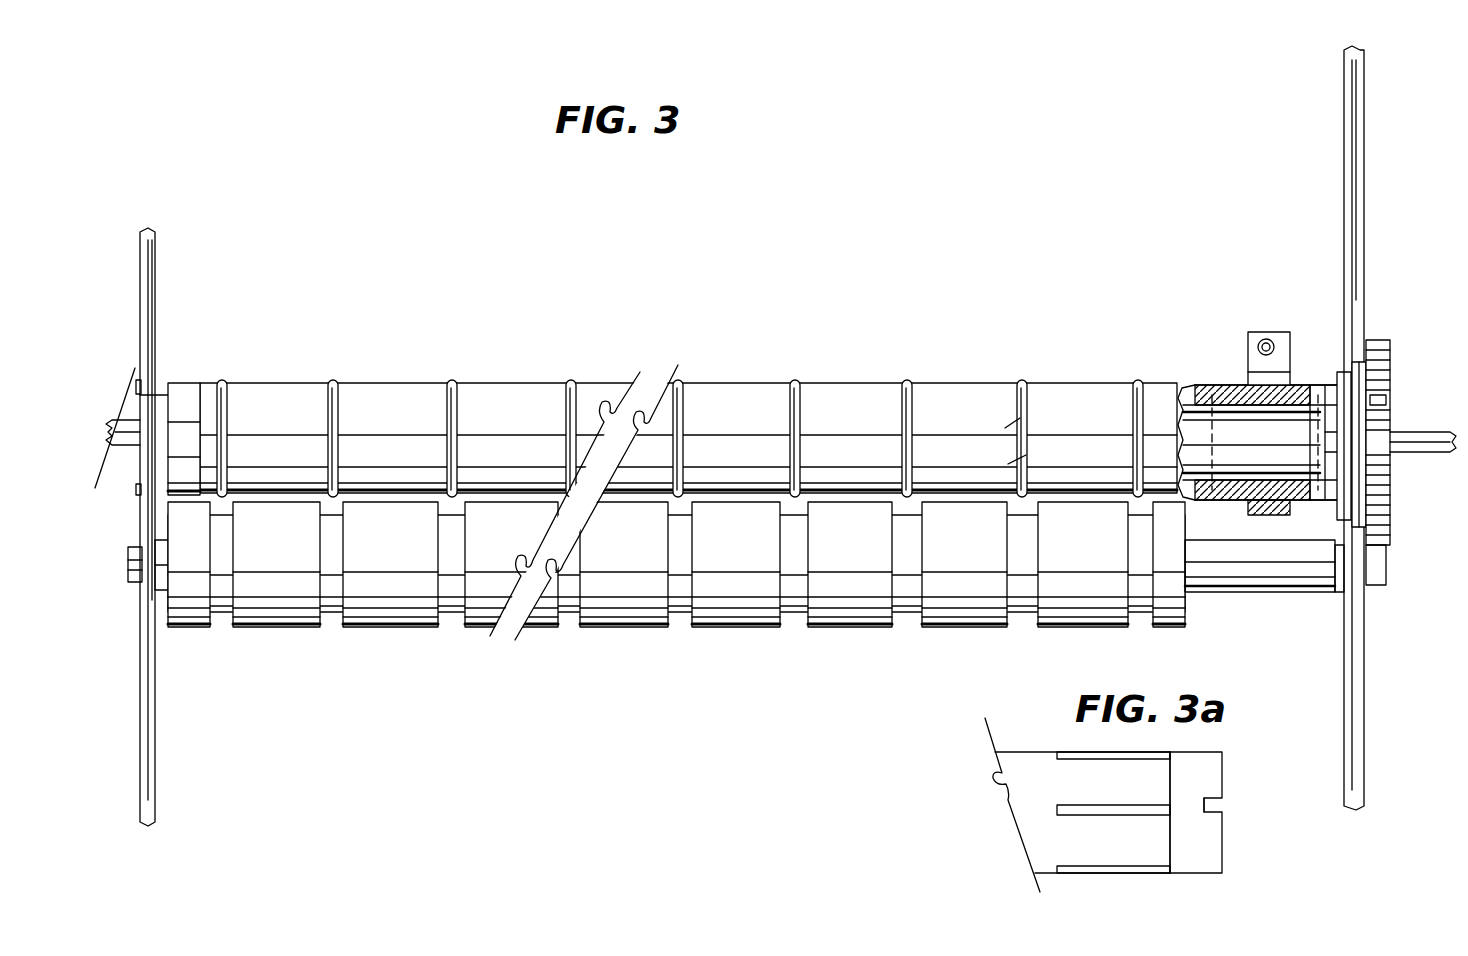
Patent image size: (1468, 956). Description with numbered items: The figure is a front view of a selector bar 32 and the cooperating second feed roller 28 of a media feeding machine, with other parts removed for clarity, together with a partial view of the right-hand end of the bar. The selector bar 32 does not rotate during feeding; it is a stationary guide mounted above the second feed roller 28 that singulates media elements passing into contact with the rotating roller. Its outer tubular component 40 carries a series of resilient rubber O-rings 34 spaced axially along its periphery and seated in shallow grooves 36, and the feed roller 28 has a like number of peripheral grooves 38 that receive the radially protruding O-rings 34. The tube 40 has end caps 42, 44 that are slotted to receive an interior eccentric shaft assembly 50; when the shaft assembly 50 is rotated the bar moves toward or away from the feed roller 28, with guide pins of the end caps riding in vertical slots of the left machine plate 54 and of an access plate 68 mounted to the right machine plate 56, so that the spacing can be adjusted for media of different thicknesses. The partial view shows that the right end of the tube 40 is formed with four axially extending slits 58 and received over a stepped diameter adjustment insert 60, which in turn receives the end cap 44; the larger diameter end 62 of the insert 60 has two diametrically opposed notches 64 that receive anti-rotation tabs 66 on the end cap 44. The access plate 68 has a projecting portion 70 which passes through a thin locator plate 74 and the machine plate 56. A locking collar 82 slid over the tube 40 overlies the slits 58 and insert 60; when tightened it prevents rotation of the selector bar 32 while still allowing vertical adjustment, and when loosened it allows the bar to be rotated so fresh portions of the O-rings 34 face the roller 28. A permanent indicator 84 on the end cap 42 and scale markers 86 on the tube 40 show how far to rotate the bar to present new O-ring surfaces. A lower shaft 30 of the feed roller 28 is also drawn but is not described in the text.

In FIG. 3, the second feed roller 28 is at (676, 601).
In FIG. 3, the lower roller shaft 30 is at (1248, 596).
In FIG. 3, the selector bar 32 is at (846, 341).
In FIG. 3a, the selector bar 32 is at (1010, 729).
In FIG. 3, the O-rings 34 is at (337, 380).
In FIG. 3, the grooves 36 is at (1024, 437).
In FIG. 3, the peripheral grooves 38 is at (335, 629).
In FIG. 3, the outer tubular component 40 is at (507, 381).
In FIG. 3a, the outer tubular component 40 is at (1052, 785).
In FIG. 3, the end cap 42 is at (160, 394).
In FIG. 3, the end cap 44 is at (1344, 387).
In FIG. 3, the eccentric shaft assembly 50 is at (1267, 440).
In FIG. 3, the machine plate 54 is at (158, 273).
In FIG. 3, the machine plate 56 is at (1366, 252).
In FIG. 3a, the axially extending slits 58 is at (1092, 755).
In FIG. 3, the stepped diameter adjustment insert 60 is at (1221, 384).
In FIG. 3a, the stepped diameter adjustment insert 60 is at (1220, 751).
In FIG. 3, the larger diameter end 62 is at (1303, 503).
In FIG. 3a, the larger diameter end 62 is at (1203, 853).
In FIG. 3a, the notches 64 is at (1223, 809).
In FIG. 3, the anti-rotation tabs 66 is at (1324, 440).
In FIG. 3, the access plate 68 is at (1391, 350).
In FIG. 3, the projecting portion 70 is at (1362, 322).
In FIG. 3, the locator plate 74 is at (1372, 399).
In FIG. 3, the locking collar 82 is at (1250, 333).
In FIG. 3, the permanent indicator 84 is at (158, 454).
In FIG. 3, the scale markers 86 is at (185, 386).